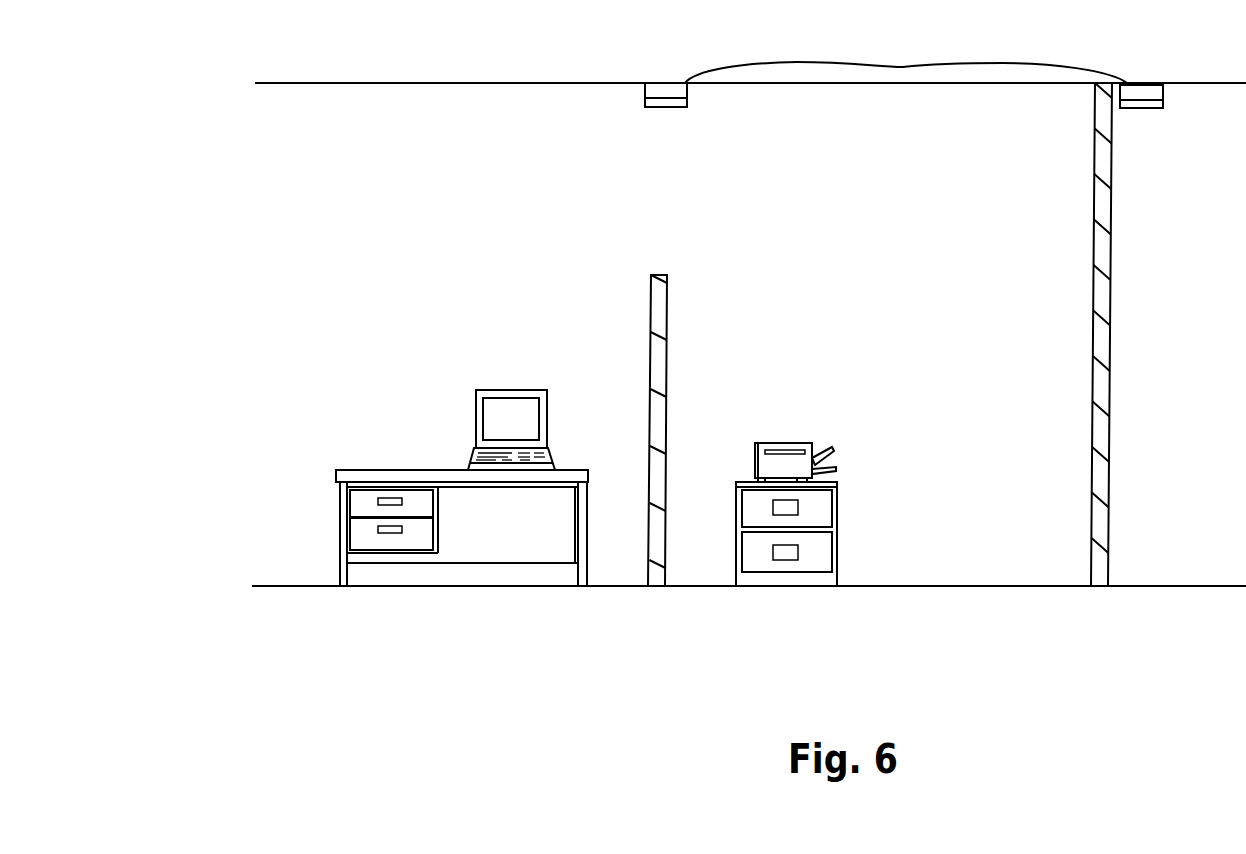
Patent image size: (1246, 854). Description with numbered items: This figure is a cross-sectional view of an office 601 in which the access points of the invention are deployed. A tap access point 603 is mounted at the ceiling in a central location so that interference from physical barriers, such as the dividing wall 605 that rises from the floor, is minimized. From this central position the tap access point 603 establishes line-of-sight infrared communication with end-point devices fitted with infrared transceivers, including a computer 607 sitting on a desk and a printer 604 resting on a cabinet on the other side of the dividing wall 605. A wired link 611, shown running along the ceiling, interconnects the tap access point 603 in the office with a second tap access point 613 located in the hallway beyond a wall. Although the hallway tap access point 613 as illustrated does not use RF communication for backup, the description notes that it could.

The office 601 is at (556, 122).
The tap access point 603 is at (660, 90).
The printer 604 is at (775, 460).
The dividing wall 605 is at (663, 352).
The computer 607 is at (497, 410).
The wired link 611 is at (855, 63).
The tap access point 613 is at (1143, 92).